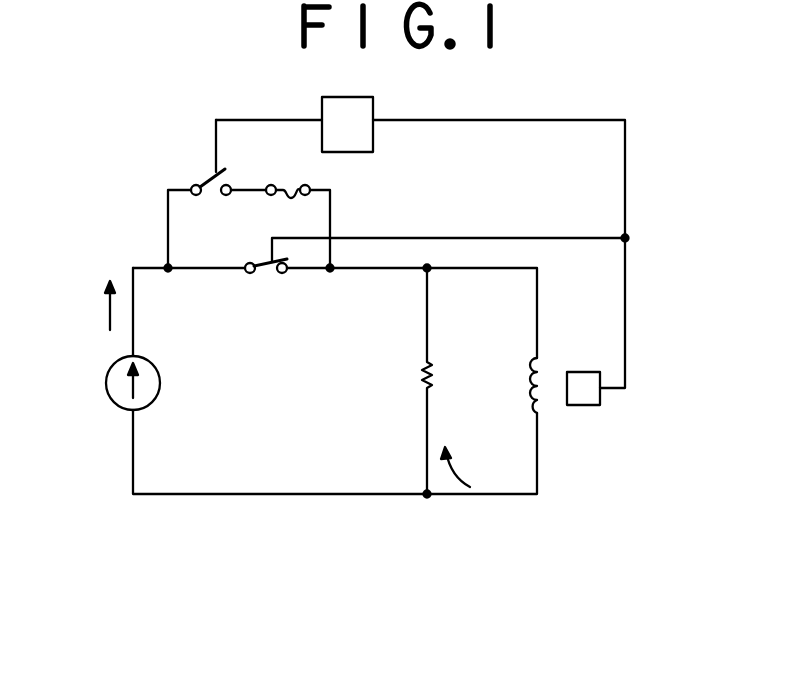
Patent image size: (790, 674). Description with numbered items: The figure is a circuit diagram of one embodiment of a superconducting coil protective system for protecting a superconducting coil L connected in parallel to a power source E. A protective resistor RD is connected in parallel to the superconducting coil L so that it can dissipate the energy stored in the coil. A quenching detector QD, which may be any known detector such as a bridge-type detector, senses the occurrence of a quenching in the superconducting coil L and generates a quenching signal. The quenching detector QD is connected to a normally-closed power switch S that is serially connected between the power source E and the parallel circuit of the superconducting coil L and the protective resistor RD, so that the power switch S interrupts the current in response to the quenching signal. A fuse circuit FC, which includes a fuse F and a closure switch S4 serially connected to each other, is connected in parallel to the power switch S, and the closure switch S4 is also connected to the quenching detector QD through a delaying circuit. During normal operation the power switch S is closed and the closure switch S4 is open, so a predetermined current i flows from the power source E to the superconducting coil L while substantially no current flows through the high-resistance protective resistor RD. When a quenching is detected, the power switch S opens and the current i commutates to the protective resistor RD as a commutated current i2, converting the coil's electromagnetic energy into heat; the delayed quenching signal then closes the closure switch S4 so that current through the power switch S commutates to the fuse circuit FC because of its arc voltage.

The power source E is at (107, 383).
The current i is at (99, 309).
The power switch S is at (266, 283).
The closure switch S4 is at (212, 200).
The fuse F is at (270, 208).
The fuse circuit FC is at (288, 176).
The protective resistor RD is at (399, 381).
The superconducting coil L is at (521, 385).
The quenching detector QD is at (590, 408).
The commutated current i2 is at (465, 464).